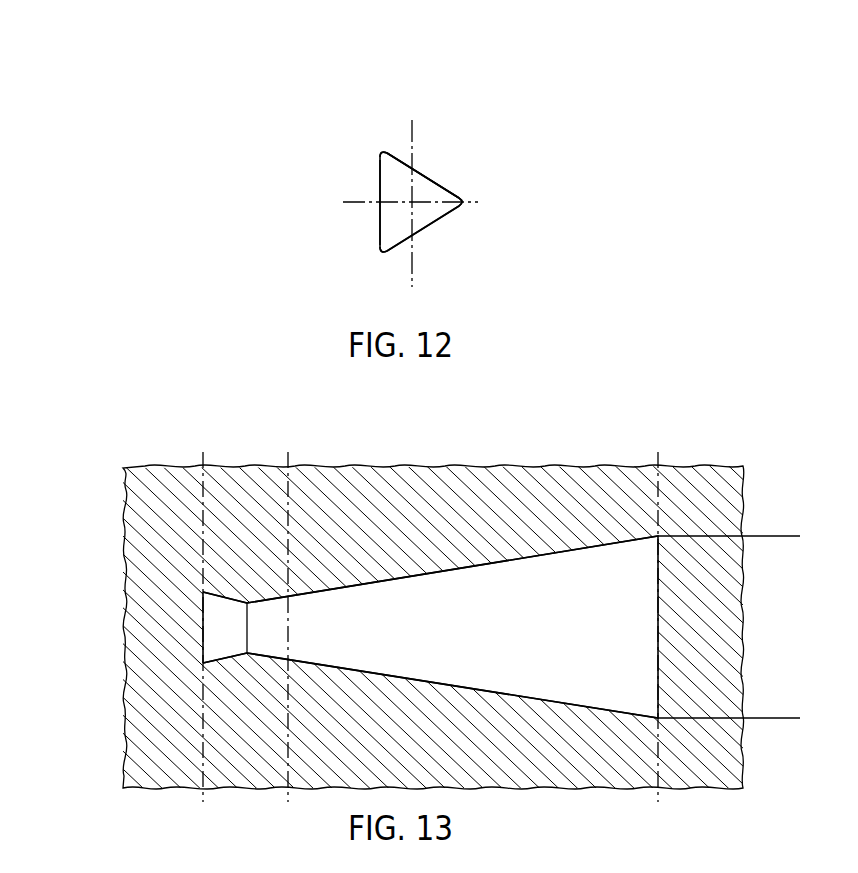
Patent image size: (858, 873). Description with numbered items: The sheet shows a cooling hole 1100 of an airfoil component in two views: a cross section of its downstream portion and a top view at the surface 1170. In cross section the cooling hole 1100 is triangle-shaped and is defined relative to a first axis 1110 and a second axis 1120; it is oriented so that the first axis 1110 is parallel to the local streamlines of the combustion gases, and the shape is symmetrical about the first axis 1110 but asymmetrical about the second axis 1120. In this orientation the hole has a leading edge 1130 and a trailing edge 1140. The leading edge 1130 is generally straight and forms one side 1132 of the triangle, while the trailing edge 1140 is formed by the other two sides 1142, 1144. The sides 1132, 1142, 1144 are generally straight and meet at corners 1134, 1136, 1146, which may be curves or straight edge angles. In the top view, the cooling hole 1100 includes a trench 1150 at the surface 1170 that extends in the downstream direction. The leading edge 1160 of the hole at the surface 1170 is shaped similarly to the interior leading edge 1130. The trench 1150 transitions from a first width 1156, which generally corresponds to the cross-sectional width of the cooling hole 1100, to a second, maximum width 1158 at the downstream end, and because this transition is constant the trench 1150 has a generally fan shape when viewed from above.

In FIG. 12, the cooling hole 1100 is at (346, 97).
In FIG. 13, the cooling hole 1100 is at (178, 448).
In FIG. 12, the first axis 1110 is at (348, 205).
In FIG. 12, the second axis 1120 is at (410, 128).
In FIG. 12, the leading edge 1130 is at (377, 178).
In FIG. 12, the side 1132 is at (378, 232).
In FIG. 12, the corner 1134 is at (381, 156).
In FIG. 12, the corner 1136 is at (383, 255).
In FIG. 12, the trailing edge 1140 is at (423, 167).
In FIG. 12, the side 1142 is at (439, 183).
In FIG. 12, the side 1144 is at (440, 222).
In FIG. 12, the corner 1146 is at (467, 199).
In FIG. 13, the trench 1150 is at (452, 678).
In FIG. 13, the first width 1156 is at (247, 606).
In FIG. 13, the second width 1158 is at (798, 538).
In FIG. 13, the leading edge 1160 is at (203, 624).
In FIG. 13, the surface 1170 is at (373, 721).